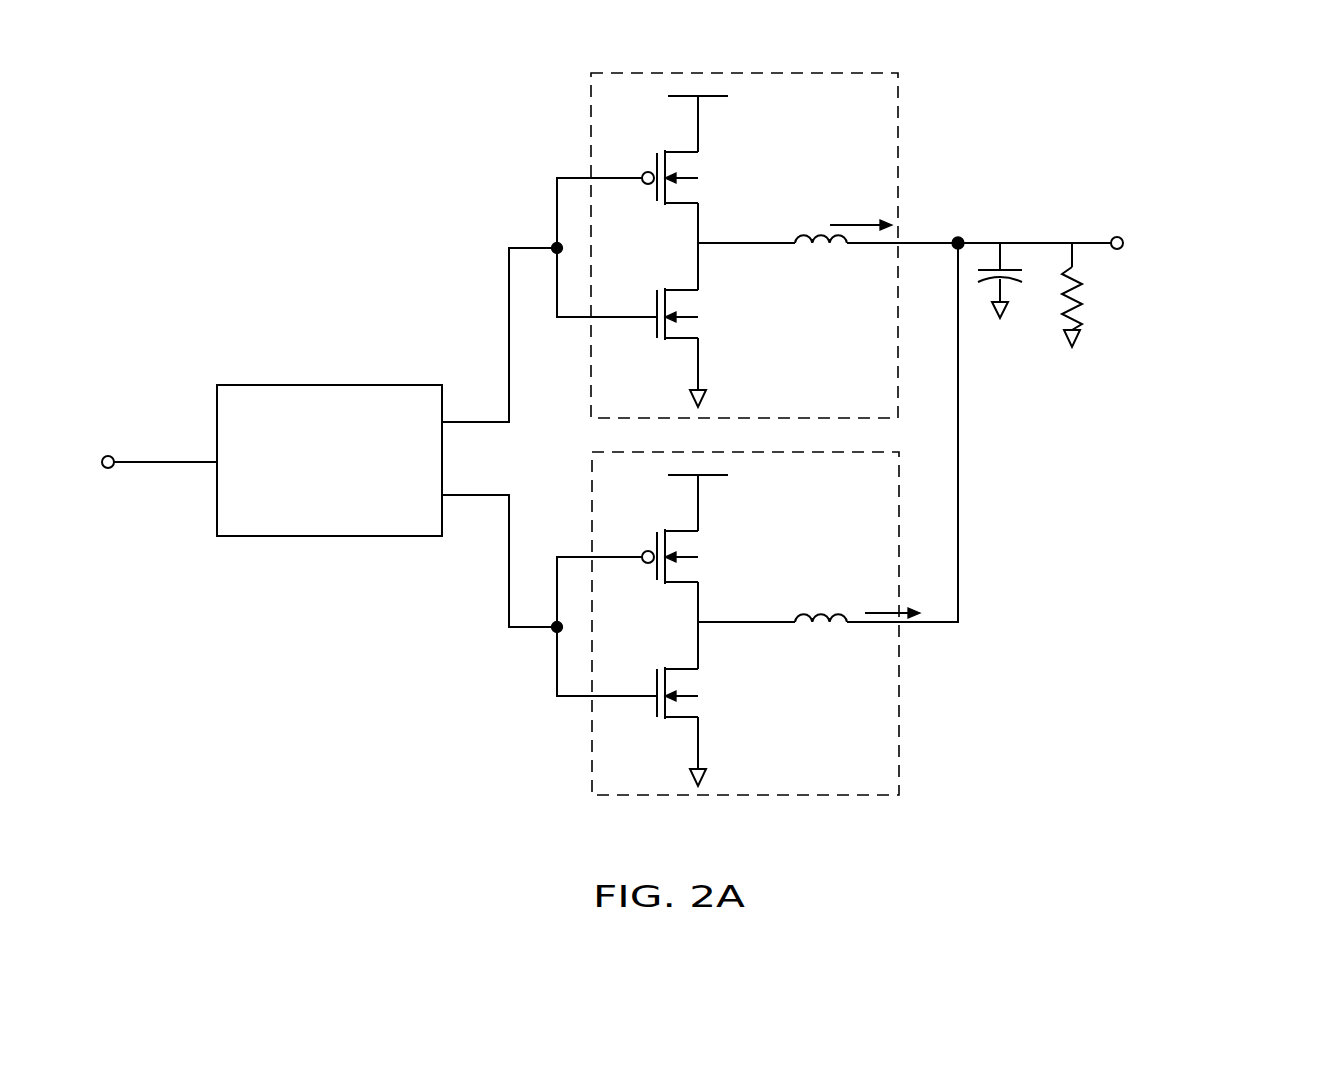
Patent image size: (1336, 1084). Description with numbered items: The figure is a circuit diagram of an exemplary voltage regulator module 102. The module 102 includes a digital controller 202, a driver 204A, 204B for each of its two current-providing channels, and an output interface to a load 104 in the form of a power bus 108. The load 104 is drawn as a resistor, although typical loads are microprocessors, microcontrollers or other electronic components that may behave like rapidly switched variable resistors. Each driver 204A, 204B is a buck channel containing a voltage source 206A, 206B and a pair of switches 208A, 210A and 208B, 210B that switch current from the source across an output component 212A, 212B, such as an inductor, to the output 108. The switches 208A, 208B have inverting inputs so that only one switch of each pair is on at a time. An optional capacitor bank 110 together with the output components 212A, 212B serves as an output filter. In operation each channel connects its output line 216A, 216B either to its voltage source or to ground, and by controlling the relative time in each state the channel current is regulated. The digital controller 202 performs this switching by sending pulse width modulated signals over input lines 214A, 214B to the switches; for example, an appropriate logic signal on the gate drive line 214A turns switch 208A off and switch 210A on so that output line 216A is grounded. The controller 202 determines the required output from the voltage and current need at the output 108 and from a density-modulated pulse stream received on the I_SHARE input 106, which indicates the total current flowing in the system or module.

The module 102 is at (1157, 735).
The load 104 is at (1078, 310).
The I_SHARE input 106 is at (145, 466).
The power bus 108 is at (1117, 237).
The capacitor bank 110 is at (1005, 325).
The digital controller 202 is at (325, 537).
The driver 204A is at (898, 117).
The driver 204B is at (900, 699).
The voltage source 206A is at (722, 97).
The voltage source 206B is at (725, 477).
The switch 208A is at (688, 204).
The switch 208B is at (685, 522).
The switch 210A is at (676, 340).
The switch 210B is at (676, 719).
The output component 212A is at (820, 252).
The output component 212B is at (815, 632).
The input line 214A is at (509, 330).
The input line 214B is at (509, 592).
The output line 216A is at (938, 243).
The output line 216B is at (960, 568).